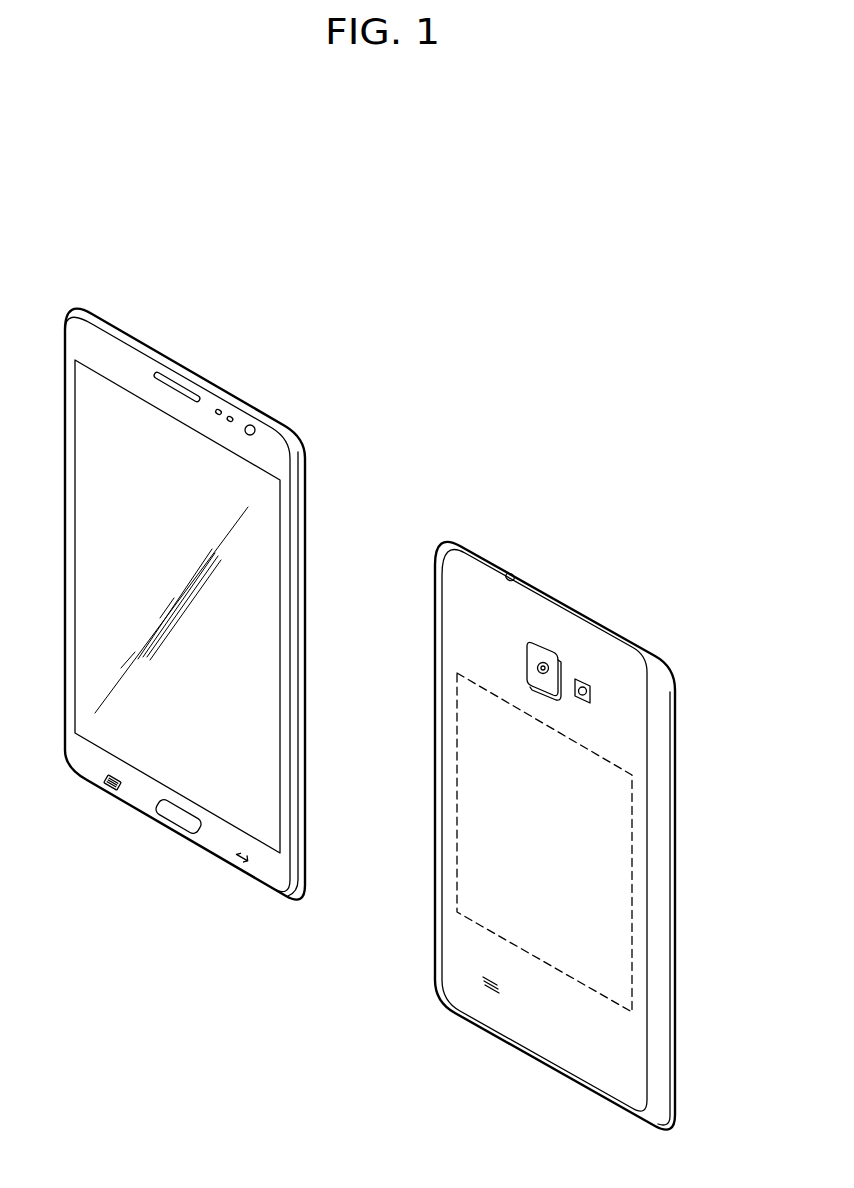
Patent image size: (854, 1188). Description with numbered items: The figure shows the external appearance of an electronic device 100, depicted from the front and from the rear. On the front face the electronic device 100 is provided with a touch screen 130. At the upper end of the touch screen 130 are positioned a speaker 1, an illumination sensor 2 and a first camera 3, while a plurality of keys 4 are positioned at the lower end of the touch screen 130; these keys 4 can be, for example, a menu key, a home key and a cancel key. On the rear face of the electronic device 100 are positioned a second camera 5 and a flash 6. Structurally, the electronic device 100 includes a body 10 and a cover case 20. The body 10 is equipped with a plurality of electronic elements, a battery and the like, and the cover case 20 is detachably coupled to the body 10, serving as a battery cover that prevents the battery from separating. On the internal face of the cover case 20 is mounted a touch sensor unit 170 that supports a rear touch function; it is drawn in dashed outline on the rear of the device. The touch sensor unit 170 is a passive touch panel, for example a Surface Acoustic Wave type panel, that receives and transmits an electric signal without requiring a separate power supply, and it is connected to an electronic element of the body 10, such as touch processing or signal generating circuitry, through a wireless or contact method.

The electronic device 100 is at (414, 432).
The body 10 is at (100, 318).
The cover case 20 is at (123, 328).
The touch screen 130 is at (250, 646).
The speaker 1 is at (183, 386).
The illumination sensor 2 is at (221, 407).
The first camera 3 is at (255, 418).
The keys 4 is at (237, 862).
The second camera 5 is at (537, 643).
The flash 6 is at (577, 678).
The touch sensor unit 170 is at (593, 855).